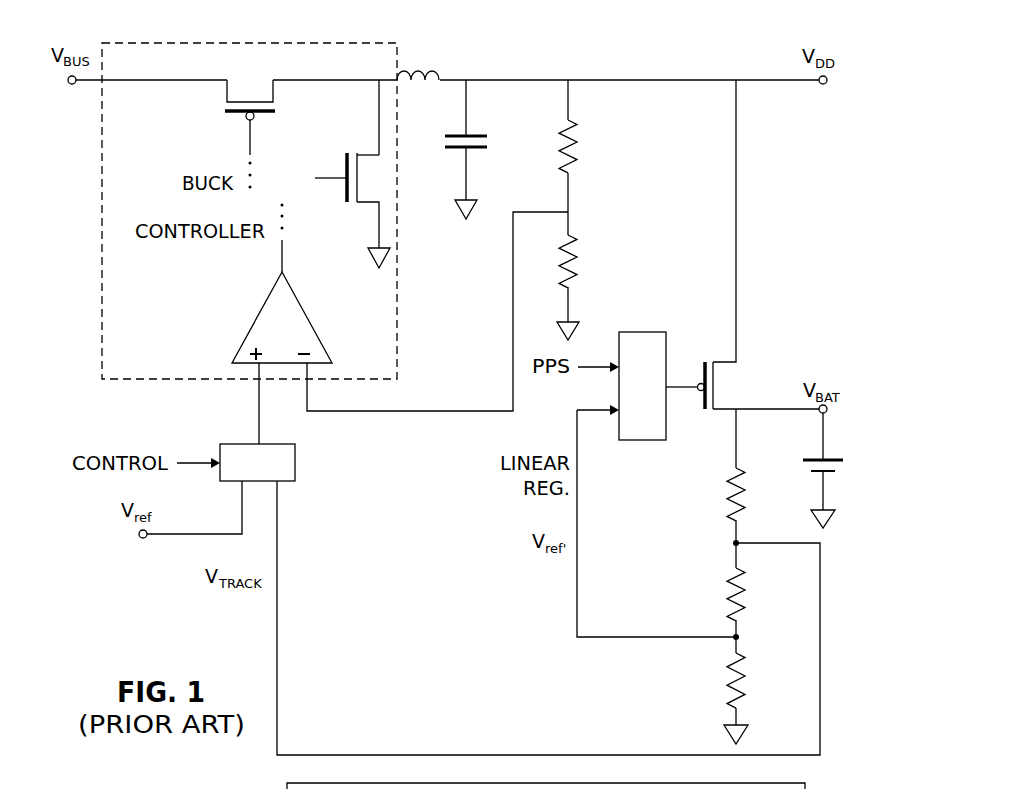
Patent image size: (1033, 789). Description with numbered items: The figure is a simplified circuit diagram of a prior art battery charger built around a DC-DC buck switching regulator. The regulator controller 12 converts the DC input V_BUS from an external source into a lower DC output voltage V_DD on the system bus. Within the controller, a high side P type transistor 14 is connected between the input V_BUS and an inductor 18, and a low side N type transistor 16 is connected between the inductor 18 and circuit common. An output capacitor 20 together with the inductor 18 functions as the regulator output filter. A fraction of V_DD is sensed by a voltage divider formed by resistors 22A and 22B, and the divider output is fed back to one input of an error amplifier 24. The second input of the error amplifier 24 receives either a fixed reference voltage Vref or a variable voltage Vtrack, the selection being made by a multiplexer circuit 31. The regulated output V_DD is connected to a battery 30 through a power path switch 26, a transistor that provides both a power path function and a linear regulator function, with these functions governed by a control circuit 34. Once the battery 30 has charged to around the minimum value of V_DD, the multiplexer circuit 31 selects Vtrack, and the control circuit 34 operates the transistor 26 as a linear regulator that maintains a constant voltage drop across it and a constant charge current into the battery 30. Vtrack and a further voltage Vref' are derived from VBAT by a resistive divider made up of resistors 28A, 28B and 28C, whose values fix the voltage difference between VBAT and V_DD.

The regulator controller 12 is at (320, 42).
The high side P type transistor 14 is at (268, 113).
The low-side switch transistor 16 is at (357, 205).
The inductor 18 is at (417, 68).
The output capacitor 20 is at (458, 150).
The resistor 22A is at (576, 145).
The resistor 22B is at (576, 259).
The error amplifier 24 is at (258, 316).
The power path switch 26 is at (720, 413).
The resistor 28A is at (728, 510).
The resistor 28B is at (744, 679).
The resistor 28C is at (744, 590).
The battery 30 is at (836, 458).
The multiplexer circuit 31 is at (297, 466).
The control circuit 34 is at (652, 330).